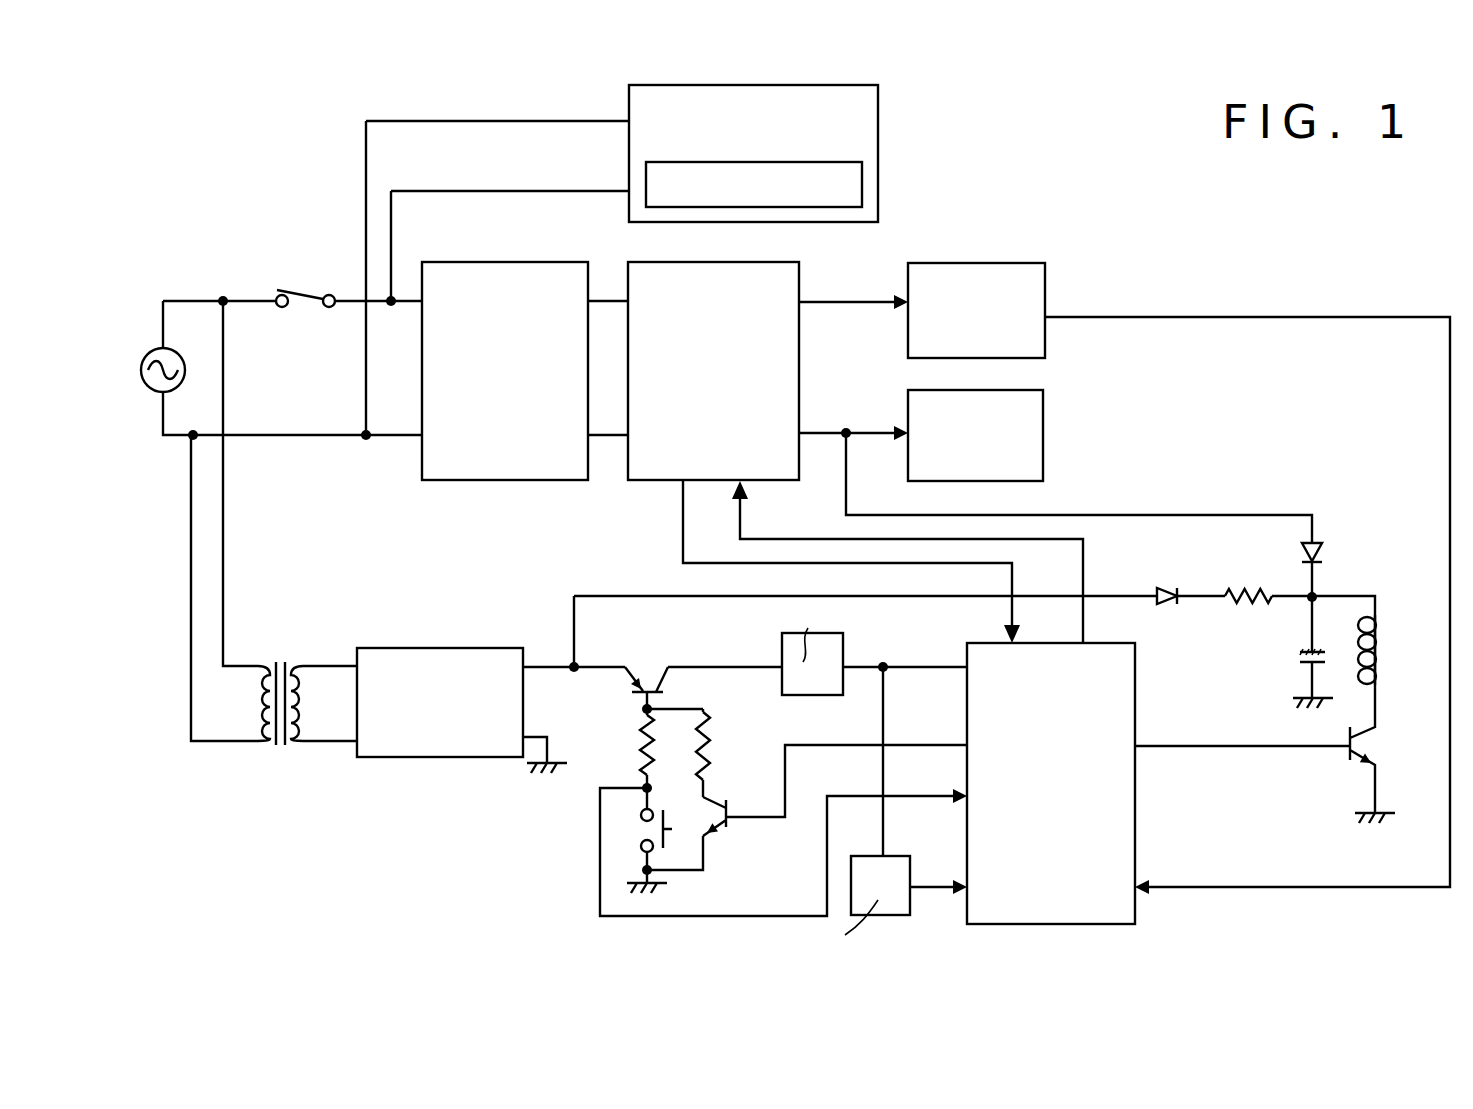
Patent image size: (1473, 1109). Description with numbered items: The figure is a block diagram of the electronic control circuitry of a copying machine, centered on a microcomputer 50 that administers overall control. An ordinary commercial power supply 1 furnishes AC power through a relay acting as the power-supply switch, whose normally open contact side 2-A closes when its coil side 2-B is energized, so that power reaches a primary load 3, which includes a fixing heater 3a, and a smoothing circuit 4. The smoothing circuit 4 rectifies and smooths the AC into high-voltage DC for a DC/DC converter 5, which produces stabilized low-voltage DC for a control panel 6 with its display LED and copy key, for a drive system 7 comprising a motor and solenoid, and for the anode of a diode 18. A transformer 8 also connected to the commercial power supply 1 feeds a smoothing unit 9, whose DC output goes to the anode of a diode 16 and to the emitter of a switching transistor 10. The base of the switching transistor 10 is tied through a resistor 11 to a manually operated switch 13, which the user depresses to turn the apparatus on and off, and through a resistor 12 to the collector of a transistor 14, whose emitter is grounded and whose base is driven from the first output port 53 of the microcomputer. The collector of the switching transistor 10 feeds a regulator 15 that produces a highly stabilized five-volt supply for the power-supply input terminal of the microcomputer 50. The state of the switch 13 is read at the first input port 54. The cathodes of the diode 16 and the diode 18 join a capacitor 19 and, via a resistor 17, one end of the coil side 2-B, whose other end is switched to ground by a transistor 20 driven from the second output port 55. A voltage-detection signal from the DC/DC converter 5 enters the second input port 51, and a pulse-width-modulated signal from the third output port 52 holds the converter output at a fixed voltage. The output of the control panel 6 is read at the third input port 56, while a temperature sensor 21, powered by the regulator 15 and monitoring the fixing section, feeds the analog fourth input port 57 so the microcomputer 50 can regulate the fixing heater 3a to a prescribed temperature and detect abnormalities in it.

The commercial power supply 1 is at (149, 348).
The contact side 2-A is at (300, 308).
The coil side 2-B is at (1385, 625).
The primary load 3 is at (880, 120).
The fixing heater 3a is at (862, 178).
The smoothing circuit 4 is at (540, 262).
The DC/DC converter 5 is at (805, 286).
The control panel 6 is at (1048, 292).
The drive system 7 is at (1045, 426).
The transformer 8 is at (275, 757).
The smoothing unit 9 is at (462, 648).
The switching transistor 10 is at (645, 662).
The resistor 11 is at (640, 750).
The resistor 12 is at (710, 745).
The manually operated switch 13 is at (660, 829).
The transistor 14 is at (728, 826).
The regulator 15 is at (782, 660).
The diode 16 is at (1165, 606).
The resistor 17 is at (1247, 590).
The diode 18 is at (1320, 552).
The capacitor 19 is at (1298, 656).
The transistor 20 is at (1372, 745).
The temperature sensor 21 is at (862, 856).
The microcomputer 50 is at (1138, 680).
The input port IP2 51 is at (1018, 640).
The output port OP3 52 is at (1090, 640).
The output port OP1 53 is at (965, 742).
The input port IP1 54 is at (965, 800).
The output port OP2 55 is at (1138, 752).
The input port IP3 56 is at (1150, 885).
The input port IP4 57 is at (965, 896).